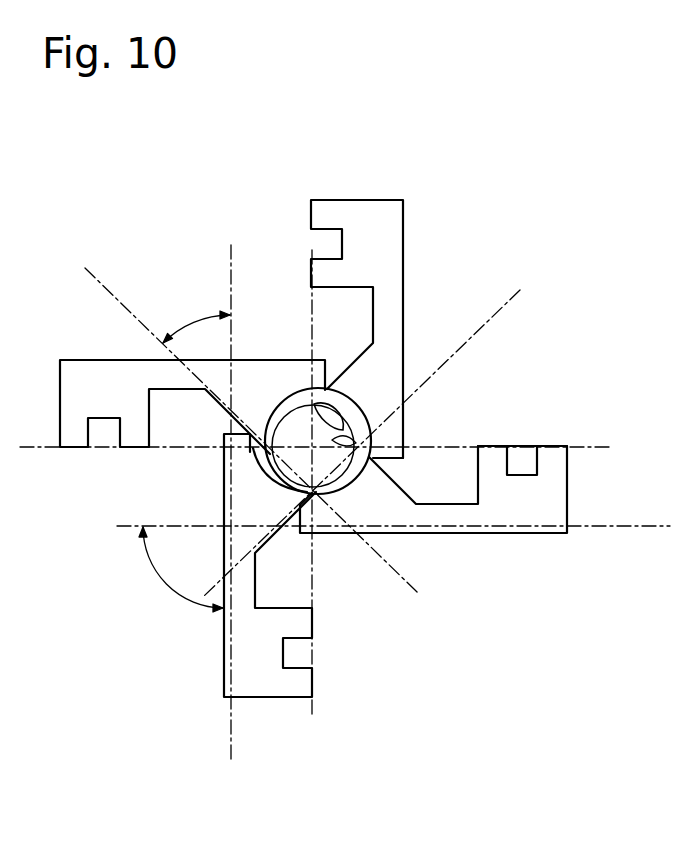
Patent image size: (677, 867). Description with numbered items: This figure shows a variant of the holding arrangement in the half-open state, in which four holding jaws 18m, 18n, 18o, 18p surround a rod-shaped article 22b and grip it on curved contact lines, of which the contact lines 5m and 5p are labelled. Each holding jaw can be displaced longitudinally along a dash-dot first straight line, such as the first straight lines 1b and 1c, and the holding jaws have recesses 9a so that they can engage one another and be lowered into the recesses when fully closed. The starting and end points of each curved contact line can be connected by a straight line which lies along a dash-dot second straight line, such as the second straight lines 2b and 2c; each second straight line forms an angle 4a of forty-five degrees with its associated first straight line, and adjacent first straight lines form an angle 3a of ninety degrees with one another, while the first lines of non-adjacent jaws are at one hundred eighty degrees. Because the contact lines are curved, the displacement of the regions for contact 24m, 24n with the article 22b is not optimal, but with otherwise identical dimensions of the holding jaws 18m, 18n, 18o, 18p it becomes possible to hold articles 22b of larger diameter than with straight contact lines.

The holding jaw 18m is at (377, 196).
The holding jaw 18n is at (444, 536).
The holding jaw 18o is at (220, 472).
The holding jaw 18p is at (283, 356).
The curved contact line 5m is at (353, 437).
The curved contact line 5p is at (346, 421).
The region for contact 24m is at (333, 403).
The region for contact 24n is at (358, 466).
The article 22b is at (323, 463).
The recess 9a is at (458, 478).
The second straight line 2b is at (510, 302).
The second straight line 2c is at (110, 294).
The first straight line 1b is at (632, 526).
The first straight line 1c is at (231, 735).
The angle 3a is at (195, 573).
The angle 4a is at (197, 337).